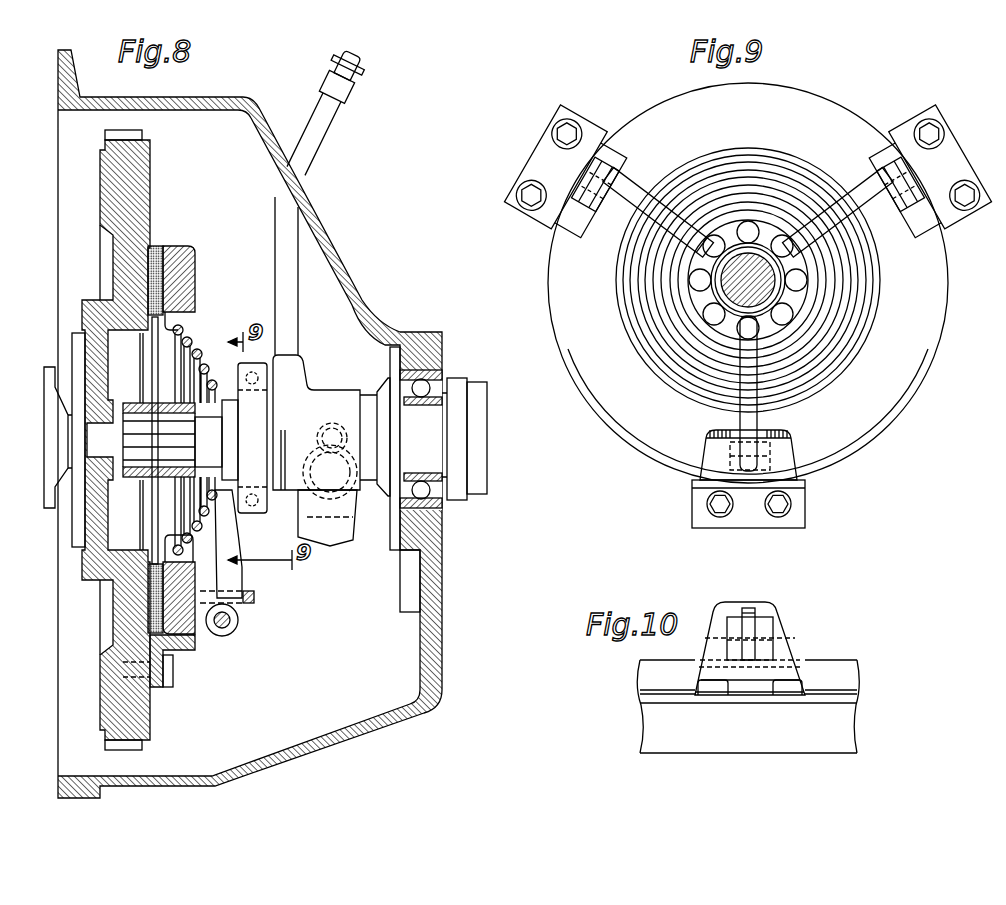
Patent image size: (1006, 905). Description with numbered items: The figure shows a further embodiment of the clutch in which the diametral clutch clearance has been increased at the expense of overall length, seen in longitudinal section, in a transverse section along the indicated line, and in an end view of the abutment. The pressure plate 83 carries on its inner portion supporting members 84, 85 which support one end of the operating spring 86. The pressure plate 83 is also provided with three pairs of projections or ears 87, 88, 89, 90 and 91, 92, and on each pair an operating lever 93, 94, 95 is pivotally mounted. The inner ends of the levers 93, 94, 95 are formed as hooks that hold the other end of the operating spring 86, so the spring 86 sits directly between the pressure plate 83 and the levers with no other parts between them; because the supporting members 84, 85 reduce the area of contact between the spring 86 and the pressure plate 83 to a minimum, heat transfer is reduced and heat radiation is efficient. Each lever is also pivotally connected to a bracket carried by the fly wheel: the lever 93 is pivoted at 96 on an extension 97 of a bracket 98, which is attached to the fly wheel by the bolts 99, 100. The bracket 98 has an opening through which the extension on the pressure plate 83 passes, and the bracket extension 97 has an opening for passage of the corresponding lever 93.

In FIG. 8, the pressure plate 83 is at (195, 258).
In FIG. 9, the pressure plate 83 is at (948, 262).
In FIG. 10, the pressure plate 83 is at (855, 688).
In FIG. 8, the supporting member 84 is at (170, 336).
In FIG. 8, the supporting member 85 is at (238, 534).
In FIG. 8, the operating spring 86 is at (206, 366).
In FIG. 9, the operating spring 86 is at (833, 297).
In FIG. 9, the projection 87 is at (737, 443).
In FIG. 10, the projection 87 is at (733, 620).
In FIG. 8, the projection 88 is at (216, 638).
In FIG. 9, the projection 88 is at (770, 452).
In FIG. 10, the projection 88 is at (770, 618).
In FIG. 9, the projection 89 is at (590, 230).
In FIG. 9, the projection 90 is at (633, 173).
In FIG. 9, the projection 91 is at (883, 167).
In FIG. 9, the projection 92 is at (900, 205).
In FIG. 8, the operating lever 93 is at (243, 549).
In FIG. 9, the operating lever 93 is at (754, 414).
In FIG. 10, the operating lever 93 is at (752, 612).
In FIG. 9, the operating lever 94 is at (622, 208).
In FIG. 9, the operating lever 95 is at (870, 197).
In FIG. 8, the pivot 96 is at (240, 592).
In FIG. 8, the bracket extension 97 is at (256, 597).
In FIG. 8, the bracket 98 is at (178, 650).
In FIG. 9, the bracket 98 is at (800, 488).
In FIG. 10, the bracket 98 is at (793, 650).
In FIG. 9, the bolt 99 is at (702, 506).
In FIG. 10, the bolt 99 is at (705, 682).
In FIG. 8, the bolt 100 is at (168, 675).
In FIG. 9, the bolt 100 is at (794, 511).
In FIG. 10, the bolt 100 is at (800, 684).